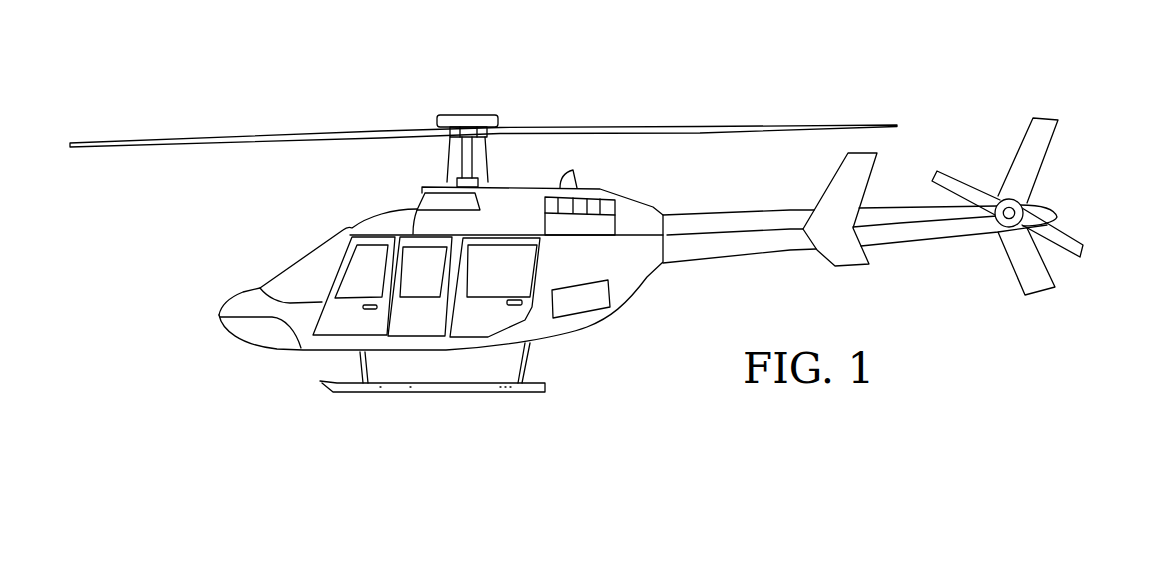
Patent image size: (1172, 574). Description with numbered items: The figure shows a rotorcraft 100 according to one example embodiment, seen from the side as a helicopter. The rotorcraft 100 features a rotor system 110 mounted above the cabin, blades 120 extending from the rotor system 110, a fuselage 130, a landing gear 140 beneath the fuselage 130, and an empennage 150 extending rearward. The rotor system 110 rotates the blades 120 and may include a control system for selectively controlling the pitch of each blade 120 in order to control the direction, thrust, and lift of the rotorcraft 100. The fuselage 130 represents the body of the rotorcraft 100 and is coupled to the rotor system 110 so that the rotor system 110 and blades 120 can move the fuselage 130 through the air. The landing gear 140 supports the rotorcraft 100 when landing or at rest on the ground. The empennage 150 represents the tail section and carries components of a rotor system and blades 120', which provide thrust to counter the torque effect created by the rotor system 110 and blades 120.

The rotorcraft 100 is at (356, 104).
The rotor system 110 is at (467, 114).
The blades 120 is at (483, 107).
The blades 120' is at (1024, 206).
The fuselage 130 is at (250, 342).
The landing gear 140 is at (418, 392).
The empennage 150 is at (737, 260).